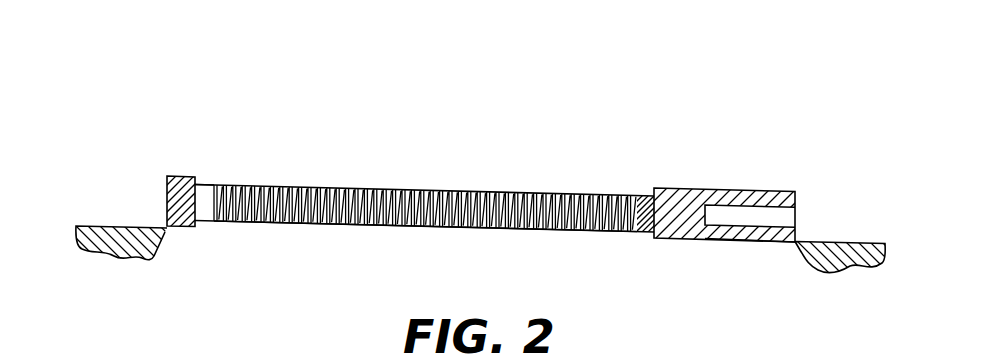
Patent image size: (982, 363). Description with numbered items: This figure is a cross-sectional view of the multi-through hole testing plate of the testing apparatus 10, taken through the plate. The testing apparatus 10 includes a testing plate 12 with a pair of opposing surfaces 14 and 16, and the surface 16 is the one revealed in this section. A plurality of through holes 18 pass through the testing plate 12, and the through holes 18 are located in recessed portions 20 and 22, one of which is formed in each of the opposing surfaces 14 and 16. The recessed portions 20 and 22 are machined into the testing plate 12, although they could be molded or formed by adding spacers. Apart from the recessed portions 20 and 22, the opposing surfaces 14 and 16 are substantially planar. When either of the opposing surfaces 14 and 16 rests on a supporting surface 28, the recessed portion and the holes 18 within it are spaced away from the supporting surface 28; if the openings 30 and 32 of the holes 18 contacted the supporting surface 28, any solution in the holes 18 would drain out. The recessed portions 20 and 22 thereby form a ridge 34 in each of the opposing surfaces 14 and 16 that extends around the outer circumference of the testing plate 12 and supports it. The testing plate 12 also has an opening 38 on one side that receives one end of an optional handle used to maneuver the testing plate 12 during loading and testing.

The testing apparatus 10 is at (379, 176).
The testing plate 12 is at (391, 206).
The opposing surface 14 is at (724, 212).
The opposing surface 16 is at (722, 233).
The through holes 18 is at (445, 206).
The recessed portion 20 is at (208, 182).
The recessed portion 22 is at (640, 236).
The supporting surface 28 is at (848, 242).
The opening 30 is at (298, 184).
The opening 32 is at (294, 225).
The ridge 34 is at (177, 177).
The opening 38 is at (756, 212).